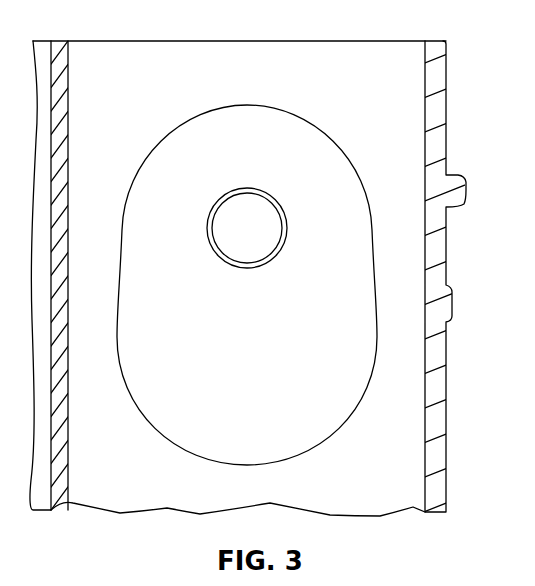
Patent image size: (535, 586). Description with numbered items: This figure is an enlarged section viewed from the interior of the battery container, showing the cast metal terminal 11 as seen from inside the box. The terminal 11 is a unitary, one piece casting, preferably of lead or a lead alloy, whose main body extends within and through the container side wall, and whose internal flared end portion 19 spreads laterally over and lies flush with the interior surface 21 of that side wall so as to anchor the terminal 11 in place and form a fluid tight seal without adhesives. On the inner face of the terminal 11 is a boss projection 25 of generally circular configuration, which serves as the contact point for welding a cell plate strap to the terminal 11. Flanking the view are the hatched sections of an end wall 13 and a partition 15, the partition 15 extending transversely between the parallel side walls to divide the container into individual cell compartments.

The terminal 11 is at (283, 140).
The end wall 13 is at (447, 416).
The partition 15 is at (60, 68).
The internal flared end portion 19 is at (325, 410).
The interior surface 21 is at (261, 277).
The boss projection 25 is at (222, 218).